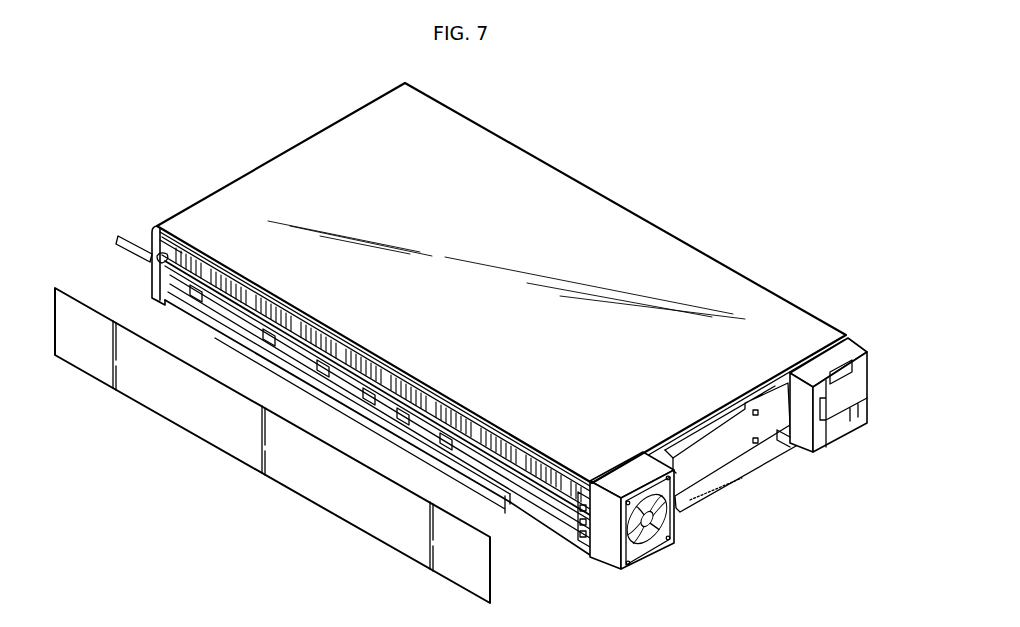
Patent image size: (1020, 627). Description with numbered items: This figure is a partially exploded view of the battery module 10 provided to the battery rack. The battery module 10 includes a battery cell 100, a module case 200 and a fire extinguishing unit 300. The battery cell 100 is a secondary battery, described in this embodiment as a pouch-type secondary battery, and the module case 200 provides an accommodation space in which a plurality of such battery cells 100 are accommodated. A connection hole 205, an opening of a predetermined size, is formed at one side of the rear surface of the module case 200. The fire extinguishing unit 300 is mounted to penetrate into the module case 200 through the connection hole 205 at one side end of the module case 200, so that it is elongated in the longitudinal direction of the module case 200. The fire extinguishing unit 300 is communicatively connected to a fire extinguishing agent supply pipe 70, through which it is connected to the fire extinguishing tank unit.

The battery module 10 is at (666, 140).
The fire extinguishing agent supply pipe 70 is at (136, 233).
The battery cell 100 is at (563, 489).
The module case 200 is at (546, 210).
The connection hole 205 is at (176, 246).
The fire extinguishing unit 300 is at (246, 308).